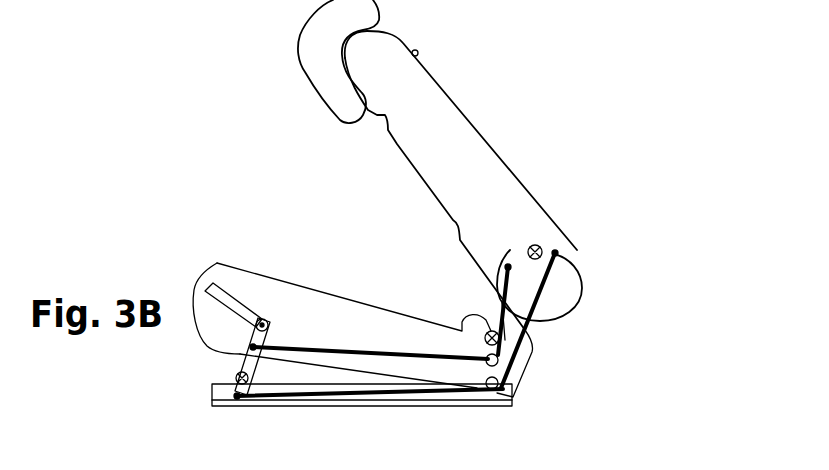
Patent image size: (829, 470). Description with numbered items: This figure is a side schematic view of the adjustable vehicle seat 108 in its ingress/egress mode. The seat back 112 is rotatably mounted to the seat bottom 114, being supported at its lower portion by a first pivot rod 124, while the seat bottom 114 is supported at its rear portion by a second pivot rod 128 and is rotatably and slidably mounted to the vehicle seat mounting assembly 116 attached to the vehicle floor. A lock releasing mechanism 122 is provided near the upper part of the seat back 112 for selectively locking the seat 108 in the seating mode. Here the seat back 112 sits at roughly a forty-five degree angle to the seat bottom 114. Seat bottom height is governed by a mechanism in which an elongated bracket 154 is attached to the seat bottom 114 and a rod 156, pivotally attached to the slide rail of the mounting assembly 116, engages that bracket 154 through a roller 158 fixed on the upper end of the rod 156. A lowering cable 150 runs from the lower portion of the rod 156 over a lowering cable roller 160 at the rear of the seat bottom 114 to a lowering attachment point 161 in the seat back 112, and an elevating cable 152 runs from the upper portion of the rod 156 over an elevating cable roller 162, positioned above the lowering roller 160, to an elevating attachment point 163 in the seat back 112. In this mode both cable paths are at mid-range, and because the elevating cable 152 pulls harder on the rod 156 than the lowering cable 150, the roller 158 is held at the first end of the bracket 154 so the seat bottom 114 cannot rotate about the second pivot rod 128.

The seat 108 is at (200, 110).
The seat back 112 is at (397, 144).
The lock releasing mechanism 122 is at (418, 52).
The first pivot rod 124 is at (541, 247).
The lowering attachment point 161 is at (557, 253).
The elevating attachment point 163 is at (507, 266).
The seat bottom 114 is at (343, 300).
The rod 156 is at (250, 356).
The elevating cable 152 is at (418, 357).
The second pivot rod 128 is at (462, 320).
The elevating cable roller 162 is at (531, 351).
The lowering cable roller 160 is at (489, 388).
The lowering cable 150 is at (291, 398).
The vehicle seat mounting assembly 116 is at (212, 392).
The elongated bracket 154 is at (220, 297).
The roller 158 is at (266, 316).